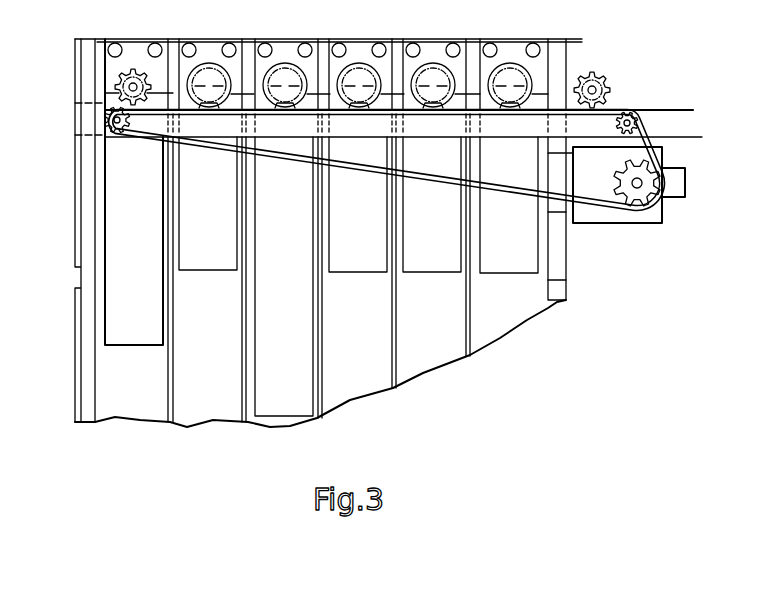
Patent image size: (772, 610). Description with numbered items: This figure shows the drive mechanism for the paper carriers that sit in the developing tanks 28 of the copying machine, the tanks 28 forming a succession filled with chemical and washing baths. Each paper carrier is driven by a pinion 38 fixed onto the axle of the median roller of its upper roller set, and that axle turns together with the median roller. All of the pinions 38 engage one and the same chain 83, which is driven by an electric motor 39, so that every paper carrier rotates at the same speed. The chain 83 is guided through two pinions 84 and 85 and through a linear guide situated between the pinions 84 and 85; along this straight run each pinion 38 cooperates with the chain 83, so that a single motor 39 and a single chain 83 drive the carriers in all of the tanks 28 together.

The tank 28 is at (115, 233).
The pinion 38 is at (106, 84).
The electric motor 39 is at (654, 213).
The chain 83 is at (133, 142).
The pinion 84 is at (104, 121).
The pinion 85 is at (638, 120).